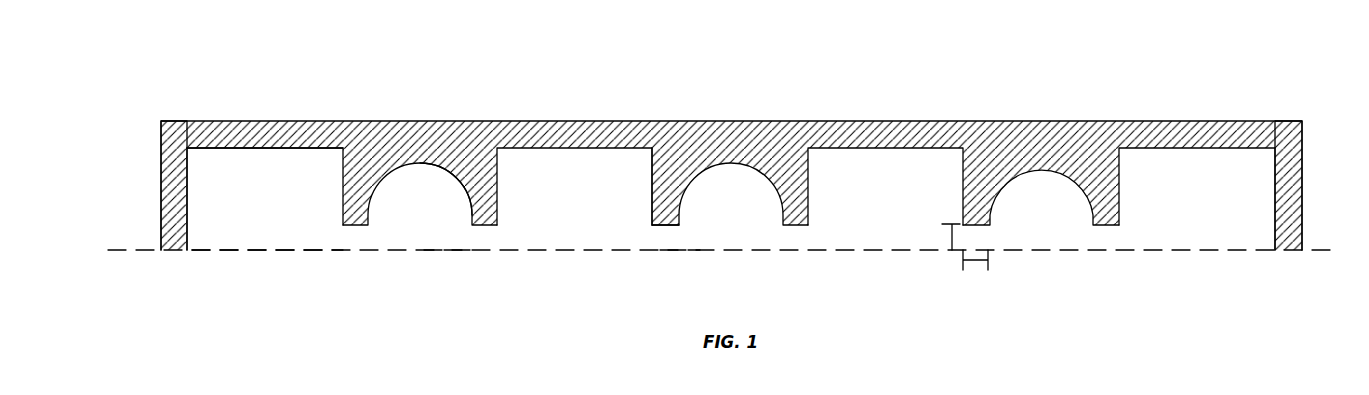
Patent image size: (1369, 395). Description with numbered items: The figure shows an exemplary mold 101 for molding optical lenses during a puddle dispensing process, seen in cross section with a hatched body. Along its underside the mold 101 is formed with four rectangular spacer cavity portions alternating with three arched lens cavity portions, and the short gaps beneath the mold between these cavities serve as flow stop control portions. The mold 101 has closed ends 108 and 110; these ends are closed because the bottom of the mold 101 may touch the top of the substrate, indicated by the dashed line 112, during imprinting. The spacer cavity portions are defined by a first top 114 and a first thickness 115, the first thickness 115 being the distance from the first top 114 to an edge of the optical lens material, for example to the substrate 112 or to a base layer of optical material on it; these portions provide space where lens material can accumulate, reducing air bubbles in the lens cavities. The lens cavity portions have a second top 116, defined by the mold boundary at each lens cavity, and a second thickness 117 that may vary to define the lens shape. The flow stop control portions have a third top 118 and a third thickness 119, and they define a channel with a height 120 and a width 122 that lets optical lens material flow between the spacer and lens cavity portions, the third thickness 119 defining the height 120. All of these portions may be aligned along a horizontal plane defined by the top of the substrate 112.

The mold 101 is at (153, 107).
The closed end 108 is at (161, 233).
The closed end 110 is at (1303, 233).
The substrate 112 is at (137, 251).
The first top 114 is at (206, 147).
The first thickness 115 is at (217, 250).
The second top 116 is at (445, 169).
The second thickness 117 is at (437, 252).
The third top 118 is at (662, 224).
The third thickness 119 is at (668, 251).
The height 120 is at (942, 224).
The width 122 is at (974, 261).